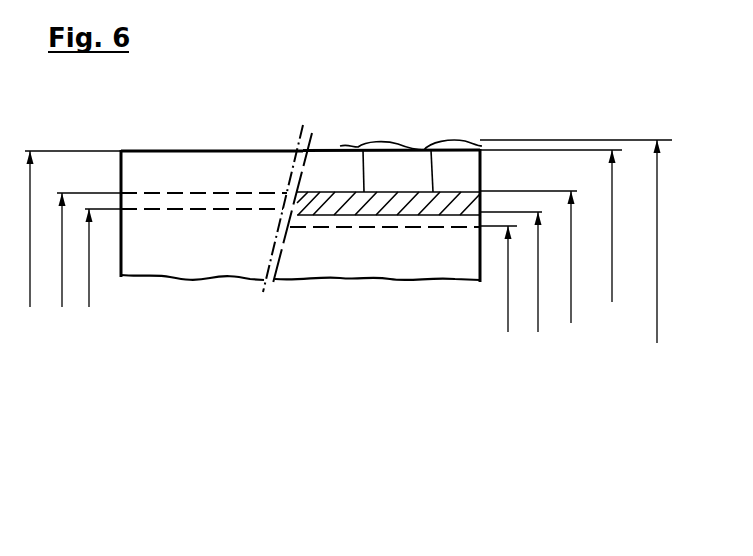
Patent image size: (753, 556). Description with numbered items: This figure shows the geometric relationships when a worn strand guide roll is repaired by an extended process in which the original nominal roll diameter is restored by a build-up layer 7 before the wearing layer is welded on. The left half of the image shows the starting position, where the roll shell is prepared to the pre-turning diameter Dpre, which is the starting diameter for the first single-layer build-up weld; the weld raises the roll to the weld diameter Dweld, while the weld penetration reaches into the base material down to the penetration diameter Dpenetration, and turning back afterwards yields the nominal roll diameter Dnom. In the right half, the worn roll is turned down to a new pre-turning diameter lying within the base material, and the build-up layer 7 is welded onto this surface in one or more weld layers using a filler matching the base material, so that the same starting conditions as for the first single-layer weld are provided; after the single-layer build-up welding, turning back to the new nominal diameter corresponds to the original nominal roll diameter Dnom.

The build-up layer 7 is at (382, 192).
The nominal roll diameter Dnom is at (66, 264).
The pre-turning diameter Dpre is at (82, 285).
The penetration diameter Dpenetration is at (95, 328).
The weld diameter Dweld is at (576, 286).